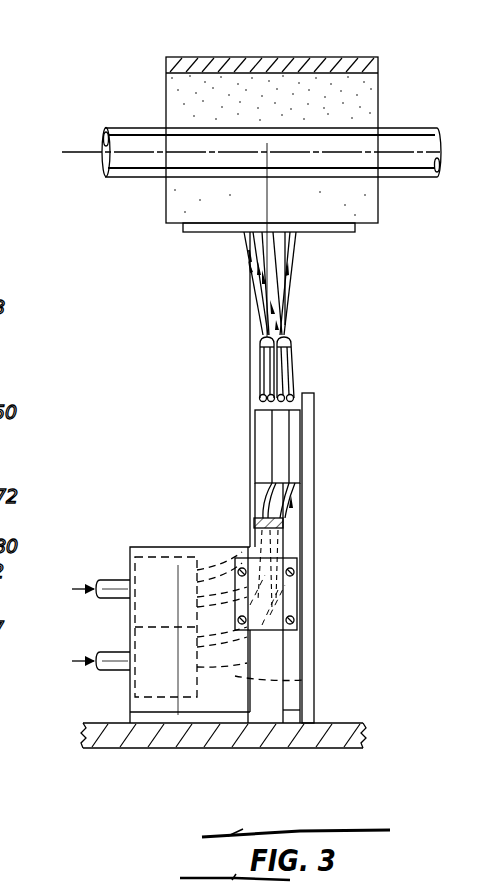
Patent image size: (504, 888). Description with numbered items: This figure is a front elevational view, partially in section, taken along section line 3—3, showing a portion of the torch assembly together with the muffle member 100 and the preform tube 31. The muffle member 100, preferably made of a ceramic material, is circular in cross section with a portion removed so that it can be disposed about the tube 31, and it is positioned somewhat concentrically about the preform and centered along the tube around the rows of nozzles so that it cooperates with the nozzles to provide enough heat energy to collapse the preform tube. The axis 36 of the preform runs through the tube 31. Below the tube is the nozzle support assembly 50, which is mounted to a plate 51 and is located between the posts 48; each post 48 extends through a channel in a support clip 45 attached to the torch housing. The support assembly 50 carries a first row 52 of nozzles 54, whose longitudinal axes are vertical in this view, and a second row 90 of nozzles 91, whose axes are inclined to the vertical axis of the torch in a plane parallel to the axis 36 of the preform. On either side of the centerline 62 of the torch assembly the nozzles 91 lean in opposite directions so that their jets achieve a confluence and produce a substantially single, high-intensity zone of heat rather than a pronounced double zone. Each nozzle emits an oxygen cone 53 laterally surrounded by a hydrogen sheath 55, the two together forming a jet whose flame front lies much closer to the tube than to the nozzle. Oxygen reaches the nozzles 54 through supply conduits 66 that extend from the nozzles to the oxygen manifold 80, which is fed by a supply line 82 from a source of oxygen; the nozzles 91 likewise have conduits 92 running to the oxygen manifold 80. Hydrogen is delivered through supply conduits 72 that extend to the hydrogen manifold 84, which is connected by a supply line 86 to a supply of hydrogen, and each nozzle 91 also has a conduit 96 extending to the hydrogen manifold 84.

The muffle member 100 is at (336, 57).
The preform tube 31 is at (398, 130).
The axis of the preform 36 is at (83, 146).
The centerline 62 is at (248, 224).
The hydrogen sheath 55 is at (296, 243).
The oxygen cone 53 is at (258, 268).
The row of nozzles 52 is at (259, 369).
The nozzle 54 is at (263, 388).
The second row of nozzles 90 is at (298, 366).
The nozzle 91 is at (295, 377).
The plate 51 is at (312, 430).
The nozzle support assembly 50 is at (245, 456).
The conduit 92 is at (296, 515).
The supply conduit 66 is at (247, 547).
The manifold 80 is at (156, 546).
The supply line 82 is at (122, 579).
The supply line 86 is at (118, 651).
The manifold 84 is at (130, 682).
The supply conduit 72 is at (316, 572).
The support clip 45 is at (290, 606).
The post 48 is at (280, 655).
The conduit 96 is at (300, 680).
The section line 3— 3 is at (10, 779).